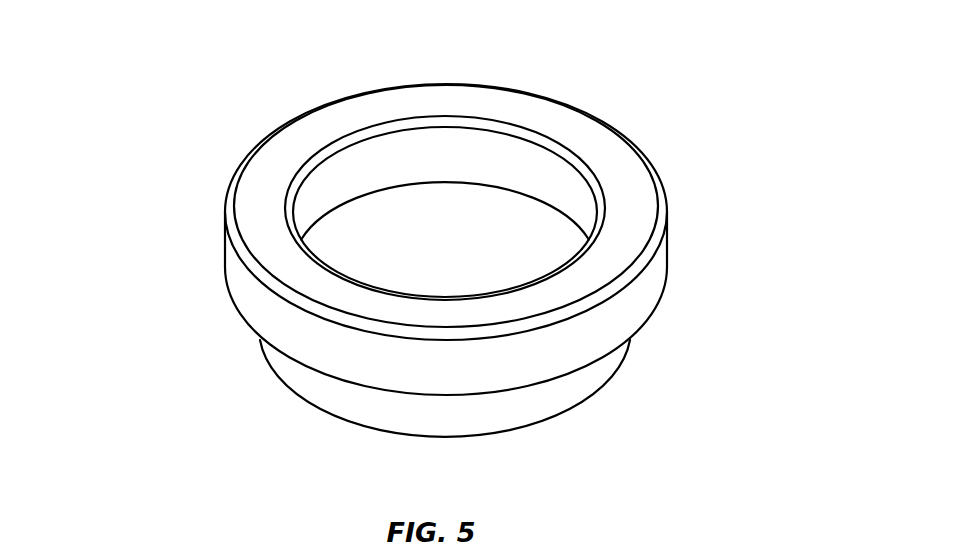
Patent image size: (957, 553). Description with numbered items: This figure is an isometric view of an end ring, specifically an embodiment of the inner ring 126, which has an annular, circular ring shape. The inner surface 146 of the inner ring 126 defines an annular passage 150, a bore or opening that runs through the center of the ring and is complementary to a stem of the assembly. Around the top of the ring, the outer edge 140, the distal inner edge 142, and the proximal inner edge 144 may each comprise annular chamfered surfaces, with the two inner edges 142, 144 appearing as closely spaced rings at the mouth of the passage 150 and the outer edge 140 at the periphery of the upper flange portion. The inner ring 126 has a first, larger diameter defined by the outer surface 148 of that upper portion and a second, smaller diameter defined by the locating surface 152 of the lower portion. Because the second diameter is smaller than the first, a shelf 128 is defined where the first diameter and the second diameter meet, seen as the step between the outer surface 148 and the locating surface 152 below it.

The inner ring 126 is at (712, 335).
The shelf 128 is at (246, 330).
The outer edge 140 is at (232, 222).
The distal inner edge 142 is at (417, 125).
The proximal inner edge 144 is at (358, 255).
The inner surface 146 is at (517, 177).
The outer surface 148 is at (657, 282).
The annular passage 150 is at (490, 270).
The locating surface 152 is at (307, 387).